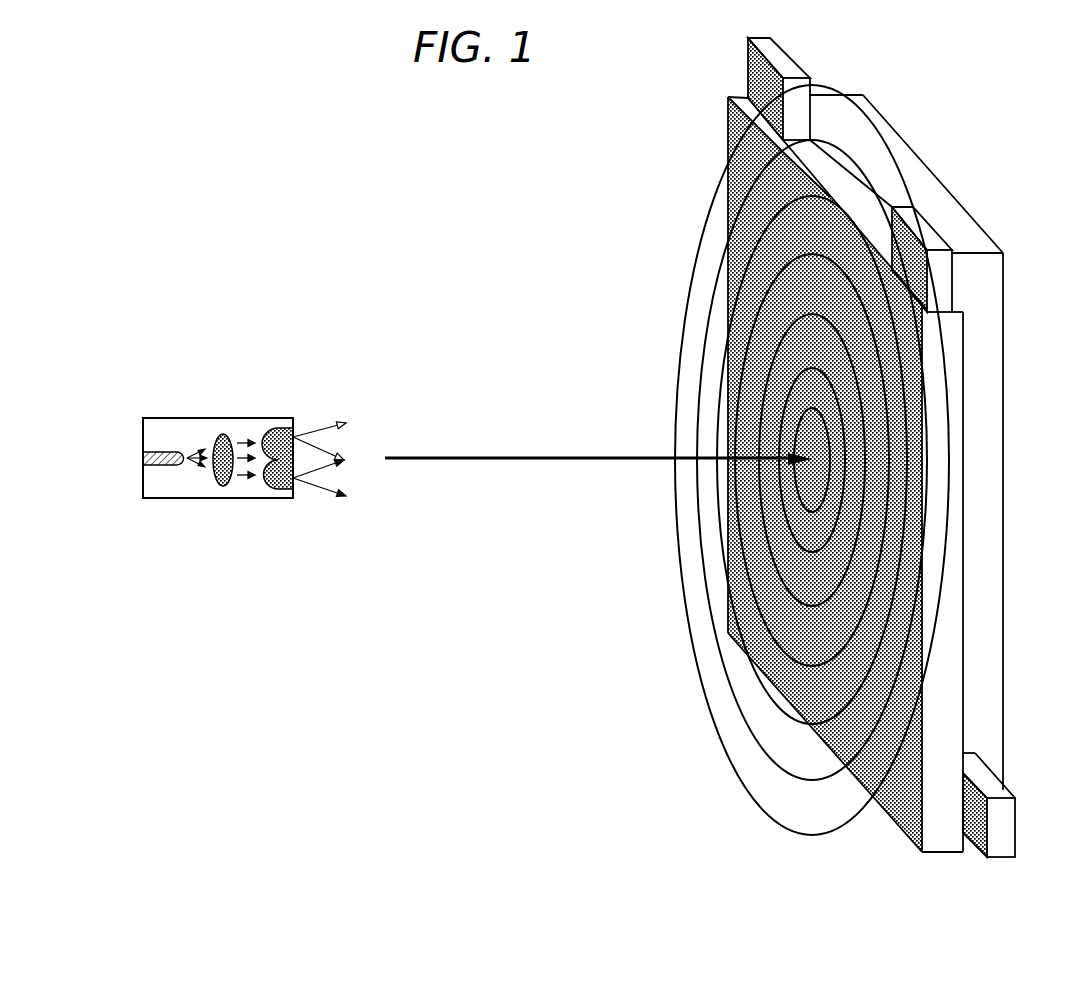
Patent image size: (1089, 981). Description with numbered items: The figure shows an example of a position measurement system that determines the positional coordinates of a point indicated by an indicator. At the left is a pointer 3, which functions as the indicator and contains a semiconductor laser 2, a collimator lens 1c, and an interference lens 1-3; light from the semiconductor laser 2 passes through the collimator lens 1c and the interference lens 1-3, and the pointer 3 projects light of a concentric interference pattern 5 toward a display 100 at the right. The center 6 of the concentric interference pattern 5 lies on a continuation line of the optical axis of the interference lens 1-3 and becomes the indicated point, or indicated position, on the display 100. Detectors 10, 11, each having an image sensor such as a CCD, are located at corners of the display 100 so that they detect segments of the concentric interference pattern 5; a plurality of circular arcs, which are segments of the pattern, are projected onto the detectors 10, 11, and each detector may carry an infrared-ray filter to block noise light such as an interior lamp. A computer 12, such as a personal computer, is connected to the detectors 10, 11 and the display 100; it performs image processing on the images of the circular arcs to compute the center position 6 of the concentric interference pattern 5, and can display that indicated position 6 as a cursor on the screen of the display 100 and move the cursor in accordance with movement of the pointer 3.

The display 100 is at (728, 118).
The detector 10 is at (804, 63).
The detector 11 is at (932, 228).
The computer 12 is at (953, 832).
The concentric interference pattern 5 is at (699, 678).
The center (indicated position) 6 is at (807, 456).
The pointer 3 is at (251, 499).
The semiconductor laser 2 is at (167, 466).
The collimator lens 1c is at (219, 436).
The interference lens 1-3 is at (285, 430).